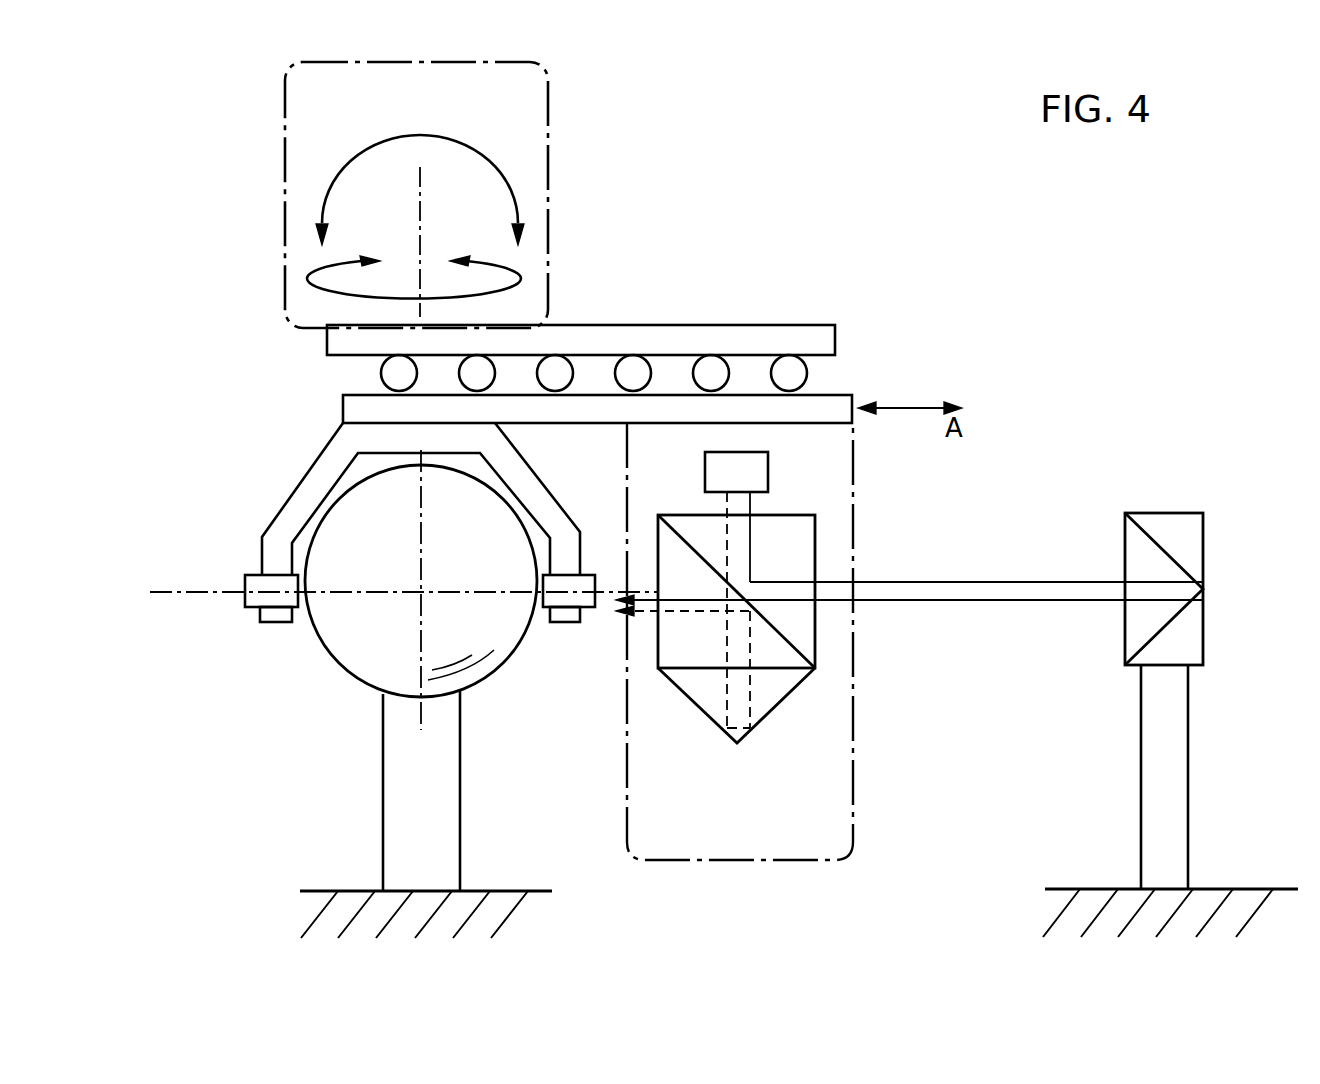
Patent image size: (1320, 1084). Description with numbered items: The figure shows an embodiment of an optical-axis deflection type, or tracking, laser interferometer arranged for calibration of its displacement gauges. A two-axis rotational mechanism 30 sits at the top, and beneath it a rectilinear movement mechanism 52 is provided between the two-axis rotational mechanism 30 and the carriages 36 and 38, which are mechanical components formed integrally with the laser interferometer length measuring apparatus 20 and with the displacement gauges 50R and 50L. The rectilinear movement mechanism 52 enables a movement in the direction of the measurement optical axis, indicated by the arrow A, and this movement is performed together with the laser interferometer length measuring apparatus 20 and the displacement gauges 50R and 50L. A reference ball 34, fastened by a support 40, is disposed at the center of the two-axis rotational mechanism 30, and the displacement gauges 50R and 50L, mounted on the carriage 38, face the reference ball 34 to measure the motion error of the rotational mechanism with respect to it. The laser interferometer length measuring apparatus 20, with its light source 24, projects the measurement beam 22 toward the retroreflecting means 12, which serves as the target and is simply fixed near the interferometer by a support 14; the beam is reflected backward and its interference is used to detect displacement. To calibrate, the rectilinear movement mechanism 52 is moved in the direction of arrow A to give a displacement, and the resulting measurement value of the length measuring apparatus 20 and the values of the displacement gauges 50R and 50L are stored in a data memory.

The retroreflecting means 12 is at (1130, 513).
The support 14 is at (1141, 826).
The laser interferometer length measuring apparatus 20 is at (745, 862).
The measurement beam 22 is at (978, 602).
The light source 24 is at (760, 477).
The two-axis rotational mechanism 30 is at (550, 90).
The reference ball 34 is at (352, 690).
The carriage 36 is at (845, 414).
The carriage 38 is at (292, 492).
The support 40 is at (383, 827).
The displacement gauge 50L is at (258, 596).
The displacement gauge 50R is at (572, 595).
The rectilinear movement mechanism 52 is at (308, 372).